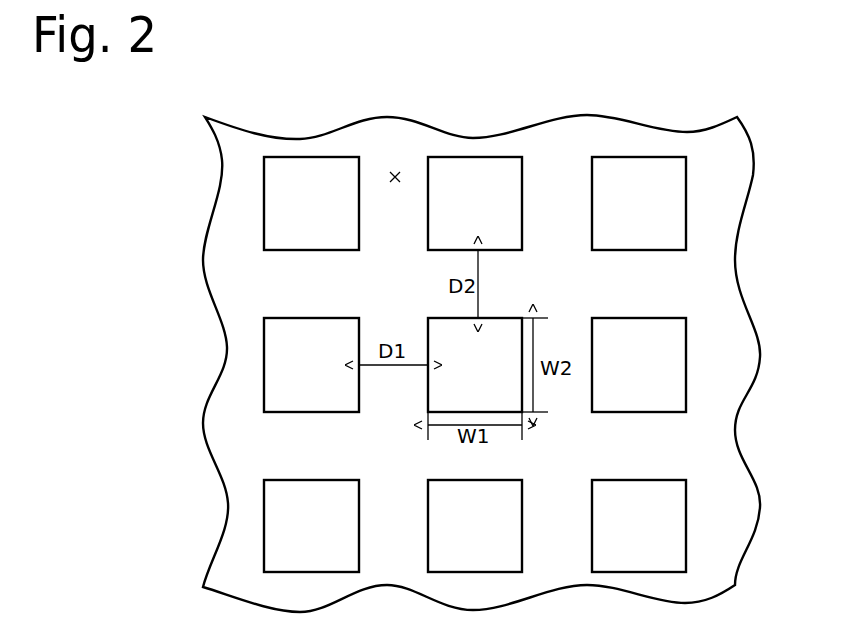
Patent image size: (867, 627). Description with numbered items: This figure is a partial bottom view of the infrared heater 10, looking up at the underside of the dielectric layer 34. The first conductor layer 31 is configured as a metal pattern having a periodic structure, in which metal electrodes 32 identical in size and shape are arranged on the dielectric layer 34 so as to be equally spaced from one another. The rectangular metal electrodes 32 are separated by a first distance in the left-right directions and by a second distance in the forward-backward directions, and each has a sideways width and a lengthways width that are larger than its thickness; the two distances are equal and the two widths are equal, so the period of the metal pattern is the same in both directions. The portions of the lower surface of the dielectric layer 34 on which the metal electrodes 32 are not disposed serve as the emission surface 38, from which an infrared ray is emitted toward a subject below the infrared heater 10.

The infrared heater 10 is at (708, 115).
The first conductor layer 31 is at (620, 140).
The metal electrodes 32 is at (503, 168).
The dielectric layer 34 is at (243, 146).
The emission surface 38 is at (395, 177).